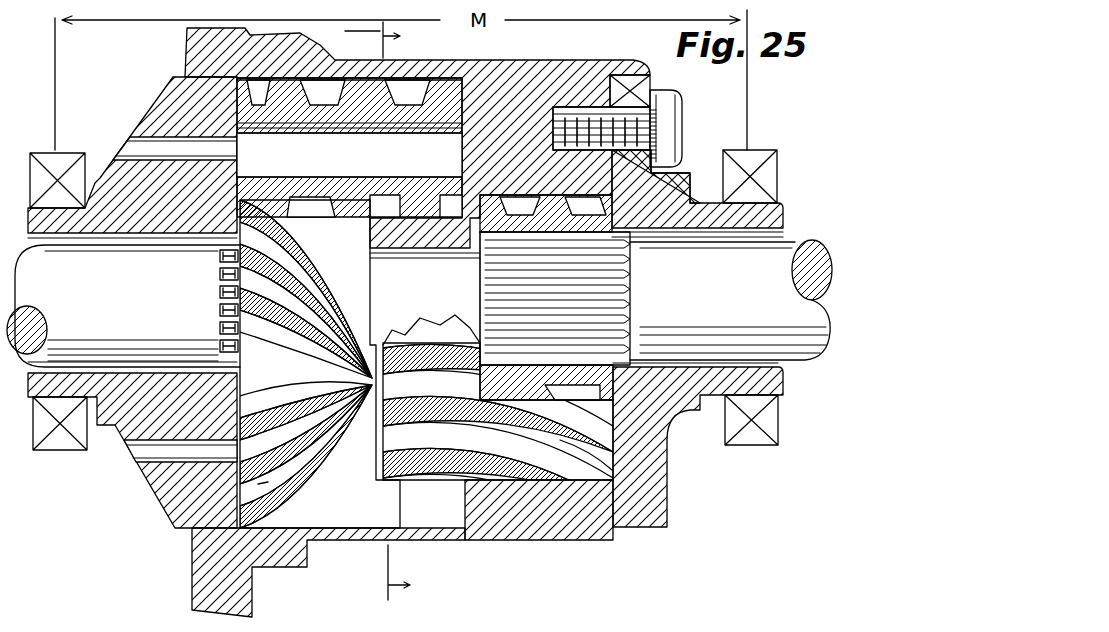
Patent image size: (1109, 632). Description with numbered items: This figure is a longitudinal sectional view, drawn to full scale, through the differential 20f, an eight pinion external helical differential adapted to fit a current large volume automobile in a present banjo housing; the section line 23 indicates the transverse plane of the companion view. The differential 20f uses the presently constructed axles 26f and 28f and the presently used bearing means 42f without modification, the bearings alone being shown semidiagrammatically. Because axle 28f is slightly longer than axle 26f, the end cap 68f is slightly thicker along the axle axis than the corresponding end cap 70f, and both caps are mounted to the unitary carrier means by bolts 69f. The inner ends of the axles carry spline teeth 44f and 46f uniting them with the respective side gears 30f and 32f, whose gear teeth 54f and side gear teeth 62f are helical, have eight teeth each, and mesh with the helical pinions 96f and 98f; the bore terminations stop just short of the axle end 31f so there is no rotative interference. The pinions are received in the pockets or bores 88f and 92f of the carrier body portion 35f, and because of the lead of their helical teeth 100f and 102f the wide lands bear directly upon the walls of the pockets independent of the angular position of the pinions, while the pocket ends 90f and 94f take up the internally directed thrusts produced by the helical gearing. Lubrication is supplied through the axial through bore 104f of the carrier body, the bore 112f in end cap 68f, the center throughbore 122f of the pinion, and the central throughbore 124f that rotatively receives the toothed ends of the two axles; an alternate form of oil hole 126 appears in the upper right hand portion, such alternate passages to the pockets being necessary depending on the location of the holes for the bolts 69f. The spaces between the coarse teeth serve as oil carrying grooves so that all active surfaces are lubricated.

The differential 20f is at (95, 573).
The section line 23 is at (377, 309).
The axle 26f is at (797, 322).
The axle 28f is at (82, 283).
The side gear 30f is at (690, 237).
The end of axle 31f is at (490, 306).
The side gear 32f is at (222, 258).
The carrier means body portion 35f is at (512, 512).
The bearing means 42f is at (58, 440).
The spline teeth 44f is at (578, 298).
The spline teeth 46f is at (220, 276).
The gear teeth 54f is at (220, 315).
The side gear teeth 62f is at (609, 230).
The end cap 68f is at (185, 495).
The bolt 69f is at (662, 97).
The end cap 70f is at (663, 510).
The pocket or bore 88f is at (422, 322).
The end of pocket 90f is at (404, 468).
The pocket or bore 92f is at (262, 92).
The end of pocket 94f is at (458, 205).
The pinion 96f is at (437, 468).
The pinion 98f is at (352, 110).
The helical teeth 100f is at (593, 462).
The helical teeth 102f is at (425, 205).
The axial through bore 104f is at (442, 270).
The bore 112f is at (137, 157).
The center throughbore 122f is at (290, 185).
The central throughbore 124f is at (615, 207).
The oil hole 126 is at (525, 82).